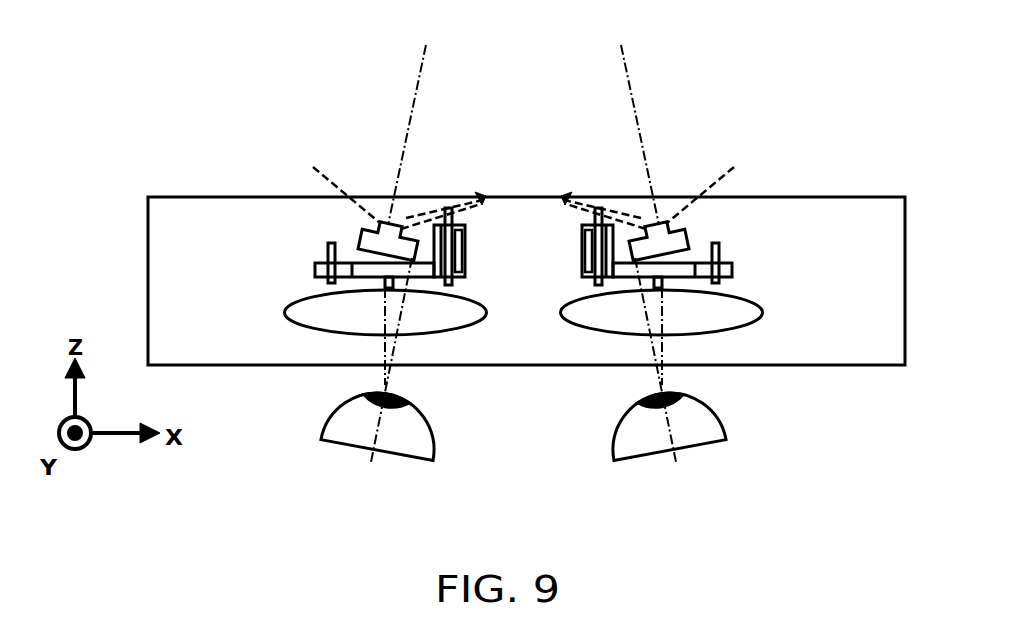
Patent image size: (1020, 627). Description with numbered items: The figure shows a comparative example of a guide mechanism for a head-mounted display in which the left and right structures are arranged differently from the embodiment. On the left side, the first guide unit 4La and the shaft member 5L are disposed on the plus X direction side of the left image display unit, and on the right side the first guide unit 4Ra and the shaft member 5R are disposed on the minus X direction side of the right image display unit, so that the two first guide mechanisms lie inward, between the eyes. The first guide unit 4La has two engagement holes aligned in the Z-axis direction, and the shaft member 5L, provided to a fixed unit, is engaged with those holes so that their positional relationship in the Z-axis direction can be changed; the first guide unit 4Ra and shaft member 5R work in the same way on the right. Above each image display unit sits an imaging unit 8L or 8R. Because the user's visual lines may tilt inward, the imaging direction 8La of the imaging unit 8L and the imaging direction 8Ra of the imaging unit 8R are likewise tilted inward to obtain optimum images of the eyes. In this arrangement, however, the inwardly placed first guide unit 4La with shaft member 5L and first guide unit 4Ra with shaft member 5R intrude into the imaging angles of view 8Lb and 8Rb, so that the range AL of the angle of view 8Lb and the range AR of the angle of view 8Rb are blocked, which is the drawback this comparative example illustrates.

The imaging unit 8L is at (380, 223).
The imaging direction 8La is at (417, 82).
The angle of view 8Lb is at (432, 197).
The shaft member 5L is at (447, 207).
The range AL is at (481, 195).
The first guide unit 4La is at (465, 228).
The imaging unit 8R is at (665, 177).
The imaging direction 8Ra is at (664, 133).
The angle of view 8Rb is at (617, 197).
The shaft member 5R is at (607, 215).
The range AR is at (555, 168).
The first guide unit 4Ra is at (582, 272).